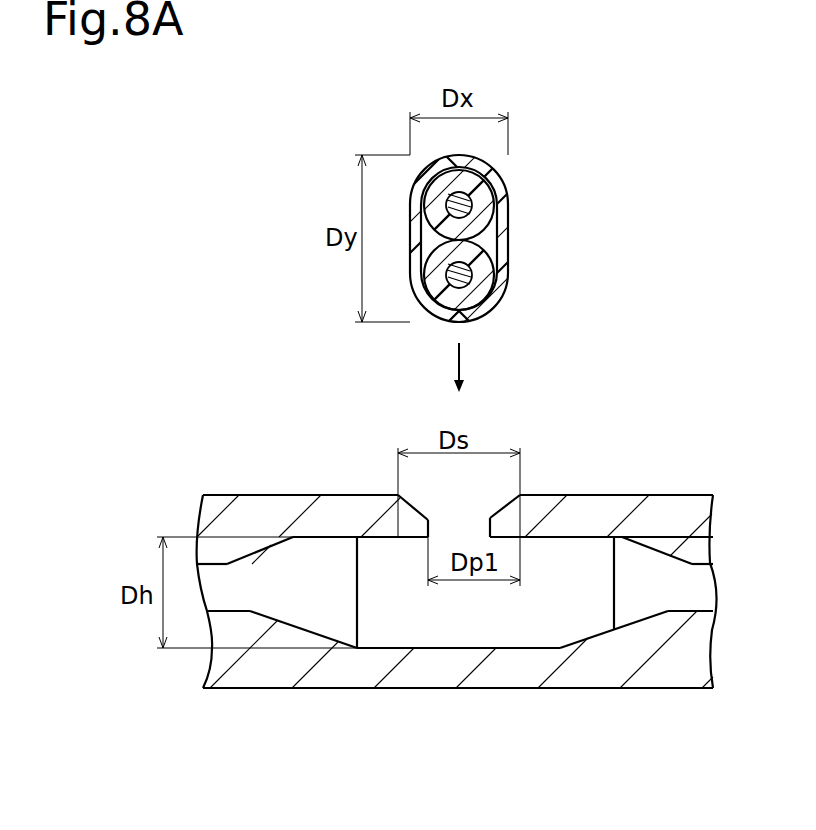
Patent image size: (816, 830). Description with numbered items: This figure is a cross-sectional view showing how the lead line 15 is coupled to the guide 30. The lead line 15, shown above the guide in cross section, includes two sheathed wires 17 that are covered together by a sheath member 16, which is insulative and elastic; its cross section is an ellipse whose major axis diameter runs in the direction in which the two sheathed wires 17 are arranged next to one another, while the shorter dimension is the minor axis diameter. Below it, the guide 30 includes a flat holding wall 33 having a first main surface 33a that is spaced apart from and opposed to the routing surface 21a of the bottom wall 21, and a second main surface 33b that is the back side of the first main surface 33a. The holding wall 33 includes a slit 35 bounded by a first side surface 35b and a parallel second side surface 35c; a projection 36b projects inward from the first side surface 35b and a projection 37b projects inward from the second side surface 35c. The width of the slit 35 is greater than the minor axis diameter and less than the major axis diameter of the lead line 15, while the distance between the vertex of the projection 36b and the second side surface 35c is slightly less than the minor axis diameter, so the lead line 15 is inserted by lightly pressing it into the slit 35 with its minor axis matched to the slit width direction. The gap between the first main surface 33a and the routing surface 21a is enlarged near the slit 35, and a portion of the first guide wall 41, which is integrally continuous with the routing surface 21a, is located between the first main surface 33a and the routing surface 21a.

The lead line 15 is at (508, 260).
The sheath member 16 is at (500, 223).
The sheathed wires 17 is at (482, 188).
The guide 30 is at (268, 495).
The slit 35 is at (450, 504).
The first side surface 35b is at (408, 528).
The second side surface 35c is at (512, 505).
The projection 36b is at (408, 500).
The projection 37b is at (508, 503).
The holding wall 33 is at (603, 564).
The first main surface 33a is at (562, 540).
The second main surface 33b is at (602, 494).
The first guide wall 41 is at (357, 608).
The bottom wall 21 is at (458, 690).
The routing surface 21a is at (466, 648).